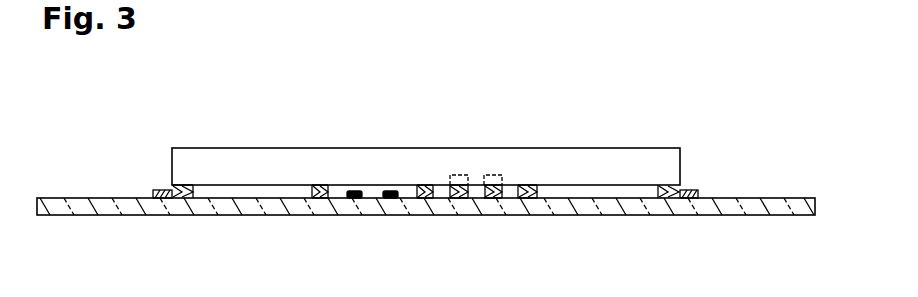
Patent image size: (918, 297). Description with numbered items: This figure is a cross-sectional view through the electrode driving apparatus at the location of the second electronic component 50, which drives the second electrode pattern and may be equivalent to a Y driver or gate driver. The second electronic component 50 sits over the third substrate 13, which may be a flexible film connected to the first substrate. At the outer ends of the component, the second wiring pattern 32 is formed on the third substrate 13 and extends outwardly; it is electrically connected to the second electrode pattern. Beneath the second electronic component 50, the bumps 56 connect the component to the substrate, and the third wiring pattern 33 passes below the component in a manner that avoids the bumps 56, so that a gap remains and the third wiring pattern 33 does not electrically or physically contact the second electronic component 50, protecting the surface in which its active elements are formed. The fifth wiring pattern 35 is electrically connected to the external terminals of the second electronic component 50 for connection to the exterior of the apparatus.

The third substrate 13 is at (765, 205).
The second wiring pattern 32 is at (172, 190).
The third wiring pattern 33 is at (352, 198).
The fifth wiring pattern 35 is at (458, 198).
The second electronic component 50 is at (462, 158).
The bumps 56 is at (320, 185).